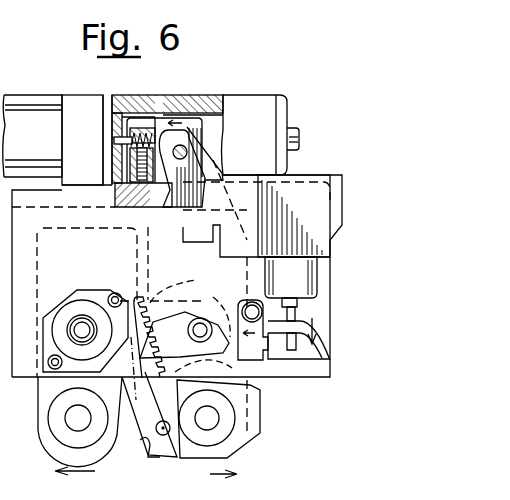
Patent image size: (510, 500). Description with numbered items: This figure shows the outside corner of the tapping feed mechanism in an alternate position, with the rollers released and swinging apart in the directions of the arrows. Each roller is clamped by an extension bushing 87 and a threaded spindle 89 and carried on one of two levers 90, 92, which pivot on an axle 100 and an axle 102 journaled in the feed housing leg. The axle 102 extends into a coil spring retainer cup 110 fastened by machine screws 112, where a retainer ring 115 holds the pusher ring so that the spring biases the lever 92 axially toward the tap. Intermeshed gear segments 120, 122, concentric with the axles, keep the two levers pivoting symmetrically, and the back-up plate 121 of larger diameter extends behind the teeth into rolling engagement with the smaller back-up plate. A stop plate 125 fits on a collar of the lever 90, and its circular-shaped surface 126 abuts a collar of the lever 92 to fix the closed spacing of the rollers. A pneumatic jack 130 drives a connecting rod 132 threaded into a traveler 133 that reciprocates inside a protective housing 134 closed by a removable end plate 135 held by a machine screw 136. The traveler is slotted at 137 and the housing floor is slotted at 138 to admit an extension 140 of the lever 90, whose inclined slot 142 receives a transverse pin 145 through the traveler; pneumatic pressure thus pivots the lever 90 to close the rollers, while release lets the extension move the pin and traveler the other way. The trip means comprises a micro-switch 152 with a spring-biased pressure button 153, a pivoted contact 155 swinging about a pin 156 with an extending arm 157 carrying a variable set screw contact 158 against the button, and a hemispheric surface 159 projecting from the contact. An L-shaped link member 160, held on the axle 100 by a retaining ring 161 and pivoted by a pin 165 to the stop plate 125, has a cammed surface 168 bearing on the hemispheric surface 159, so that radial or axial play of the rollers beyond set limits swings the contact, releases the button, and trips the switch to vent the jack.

The extension bushing 87 is at (70, 436).
The threaded spindle 89 is at (72, 420).
The lever 90 is at (245, 382).
The lever 92 is at (43, 394).
The axle 100 is at (243, 311).
The axle 102 is at (80, 318).
The coil spring retainer cup 110 is at (85, 302).
The machine screws 112 is at (115, 293).
The retainer ring 115 is at (74, 320).
The gear segment 120 is at (175, 298).
The back-up plate 121 is at (144, 354).
The gear segment 122 is at (150, 300).
The stop plate 125 is at (165, 452).
The circular-shaped surface 126 is at (147, 442).
The pneumatic jack 130 is at (75, 107).
The connecting rod 132 is at (118, 132).
The traveler 133 is at (150, 97).
The protective housing 134 is at (218, 96).
The removable end plate 135 is at (282, 100).
The machine screw 136 is at (298, 142).
The slot 137 is at (153, 168).
The slot 138 is at (160, 194).
The extension 140 is at (205, 180).
The inclined slot 142 is at (200, 96).
The transverse pin 145 is at (187, 150).
The micro-switch 152 is at (318, 238).
The pressure button 153 is at (297, 304).
The pivoted contact 155 is at (265, 354).
The pin 156 is at (258, 296).
The extending arm 157 is at (302, 333).
The variable set screw contact 158 is at (297, 348).
The hemispheric surface 159 is at (245, 350).
The link member 160 is at (175, 354).
The retaining ring 161 is at (200, 319).
The pin 165 is at (166, 434).
The cammed surface 168 is at (203, 361).